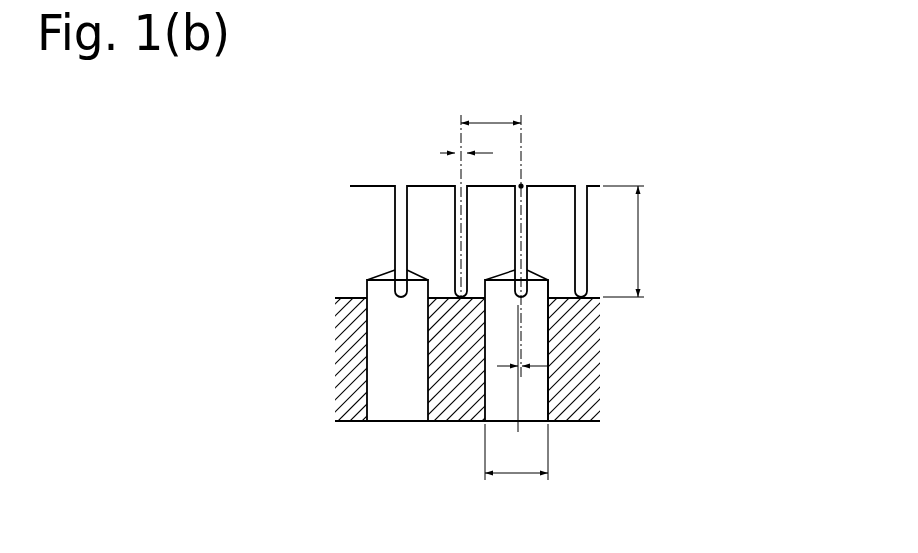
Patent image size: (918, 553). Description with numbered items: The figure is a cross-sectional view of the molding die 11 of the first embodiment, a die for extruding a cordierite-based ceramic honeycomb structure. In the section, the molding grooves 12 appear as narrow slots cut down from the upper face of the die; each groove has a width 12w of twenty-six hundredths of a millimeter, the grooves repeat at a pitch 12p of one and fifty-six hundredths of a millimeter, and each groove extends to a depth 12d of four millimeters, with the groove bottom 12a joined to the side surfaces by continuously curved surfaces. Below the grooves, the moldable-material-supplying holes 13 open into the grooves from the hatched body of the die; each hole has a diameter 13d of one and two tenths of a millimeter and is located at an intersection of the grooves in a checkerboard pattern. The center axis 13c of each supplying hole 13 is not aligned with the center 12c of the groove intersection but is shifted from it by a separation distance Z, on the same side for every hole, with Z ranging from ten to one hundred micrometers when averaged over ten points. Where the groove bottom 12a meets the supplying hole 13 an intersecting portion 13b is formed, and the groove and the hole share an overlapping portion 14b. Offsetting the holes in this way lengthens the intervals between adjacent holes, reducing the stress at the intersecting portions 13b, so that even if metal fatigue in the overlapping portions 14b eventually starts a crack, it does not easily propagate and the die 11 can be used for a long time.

The die 11 is at (285, 167).
The molding groove 12 is at (403, 197).
The bottom of molding groove 12a is at (355, 297).
The center of intersection of molding grooves 12c is at (522, 184).
The depth of molding groove 12d is at (629, 241).
The pitch of molding grooves 12p is at (491, 112).
The width of molding groove 12w is at (449, 145).
The moldable-material-supplying hole 13 is at (400, 404).
The intersecting portion of groove bottom and supplying hole 13b is at (487, 295).
The center axis of moldable-material-supplying hole 13c is at (518, 398).
The diameter of moldable-material-supplying hole 13d is at (516, 452).
The overlapping portion 14b is at (428, 289).
The separation distance Z is at (521, 368).